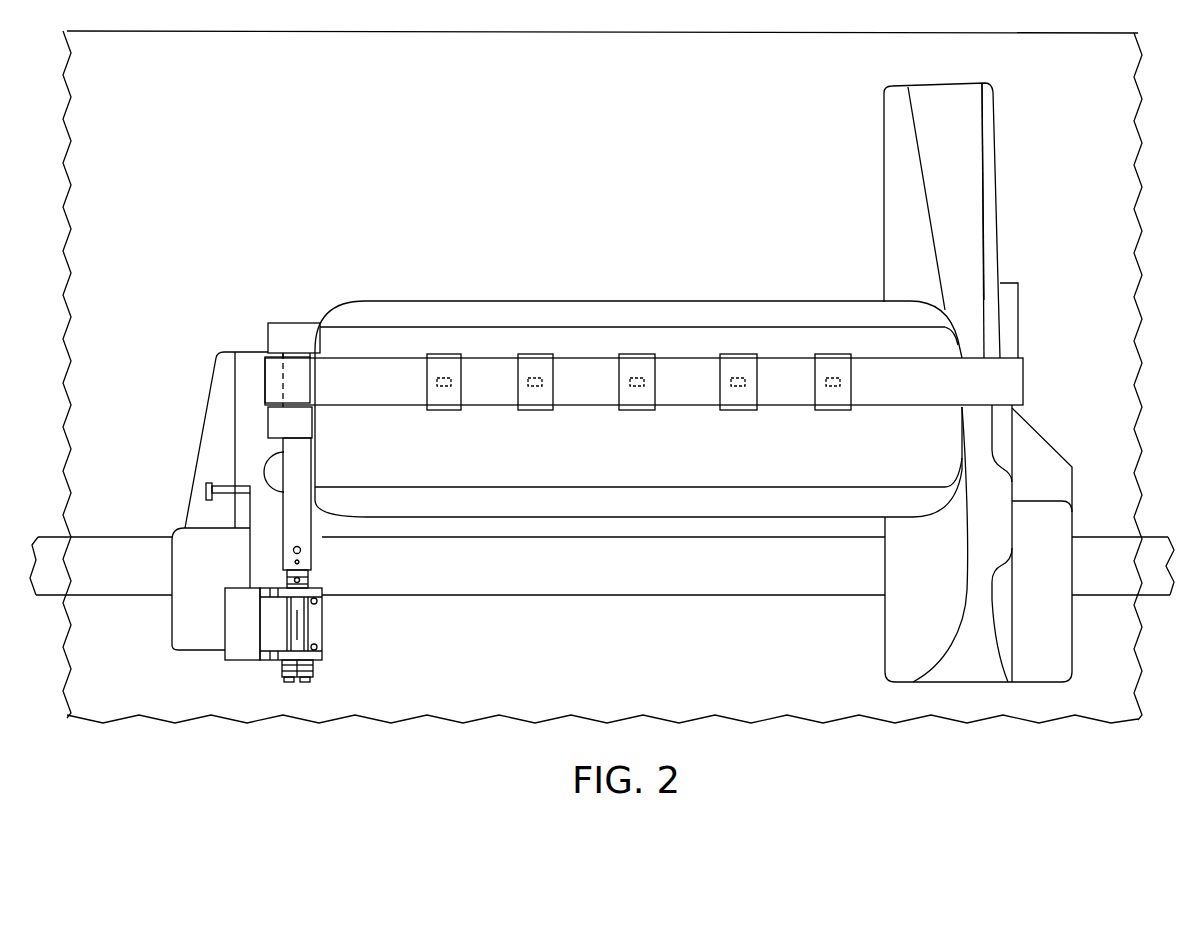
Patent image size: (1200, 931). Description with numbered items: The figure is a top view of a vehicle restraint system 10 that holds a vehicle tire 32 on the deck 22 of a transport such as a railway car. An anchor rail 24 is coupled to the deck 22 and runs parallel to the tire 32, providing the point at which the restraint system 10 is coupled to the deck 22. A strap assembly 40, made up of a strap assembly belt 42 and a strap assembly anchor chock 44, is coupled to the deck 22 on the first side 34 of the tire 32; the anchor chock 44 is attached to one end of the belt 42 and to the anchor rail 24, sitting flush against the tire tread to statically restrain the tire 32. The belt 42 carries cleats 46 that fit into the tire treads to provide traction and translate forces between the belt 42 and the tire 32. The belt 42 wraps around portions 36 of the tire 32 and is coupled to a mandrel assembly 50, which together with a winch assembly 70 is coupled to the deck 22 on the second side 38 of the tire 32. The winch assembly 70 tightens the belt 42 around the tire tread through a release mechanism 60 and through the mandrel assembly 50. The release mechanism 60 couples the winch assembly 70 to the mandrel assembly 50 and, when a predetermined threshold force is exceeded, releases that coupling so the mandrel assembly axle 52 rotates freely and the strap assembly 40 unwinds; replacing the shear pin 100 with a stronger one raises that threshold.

The vehicle restraint system 10 is at (373, 96).
The deck 22 is at (1112, 215).
The anchor rail 24 is at (705, 578).
The tire 32 is at (638, 354).
The first side 34 is at (943, 198).
The portions 36 is at (779, 343).
The second side 38 is at (294, 329).
The strap assembly 40 is at (923, 382).
The strap assembly belt 42 is at (498, 400).
The strap assembly anchor chock 44 is at (965, 162).
The cleats 46 is at (637, 388).
The mandrel assembly 50 is at (205, 459).
The mandrel assembly axle 52 is at (310, 373).
The release mechanism 60 is at (342, 513).
The winch assembly 70 is at (344, 635).
The shear pin 100 is at (300, 562).